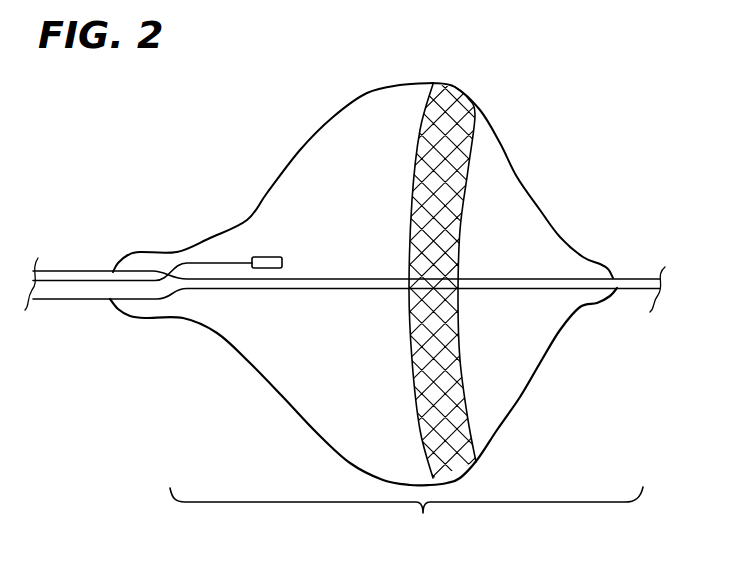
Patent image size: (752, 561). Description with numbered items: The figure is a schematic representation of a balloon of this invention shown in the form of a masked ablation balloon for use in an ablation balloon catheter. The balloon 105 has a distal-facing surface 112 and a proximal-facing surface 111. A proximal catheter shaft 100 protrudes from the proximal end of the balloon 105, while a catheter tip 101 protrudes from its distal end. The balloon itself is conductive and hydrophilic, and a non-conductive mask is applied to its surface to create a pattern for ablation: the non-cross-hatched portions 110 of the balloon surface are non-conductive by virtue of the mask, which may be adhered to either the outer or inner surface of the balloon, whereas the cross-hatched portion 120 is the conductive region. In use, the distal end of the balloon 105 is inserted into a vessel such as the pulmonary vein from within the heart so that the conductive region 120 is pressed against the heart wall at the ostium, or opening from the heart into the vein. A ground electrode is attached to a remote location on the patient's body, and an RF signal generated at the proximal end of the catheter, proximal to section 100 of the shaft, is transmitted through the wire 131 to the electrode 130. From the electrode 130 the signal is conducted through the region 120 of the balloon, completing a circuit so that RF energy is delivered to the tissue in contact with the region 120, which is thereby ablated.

The proximal catheter shaft 100 is at (78, 302).
The catheter tip 101 is at (640, 278).
The balloon 105 is at (406, 522).
The non-cross-hatched portions 110 is at (328, 338).
The proximal-facing surface 111 is at (300, 148).
The distal-facing surface 112 is at (528, 140).
The cross-hatched portion 120 is at (442, 155).
The electrode 130 is at (258, 255).
The wire 131 is at (58, 277).